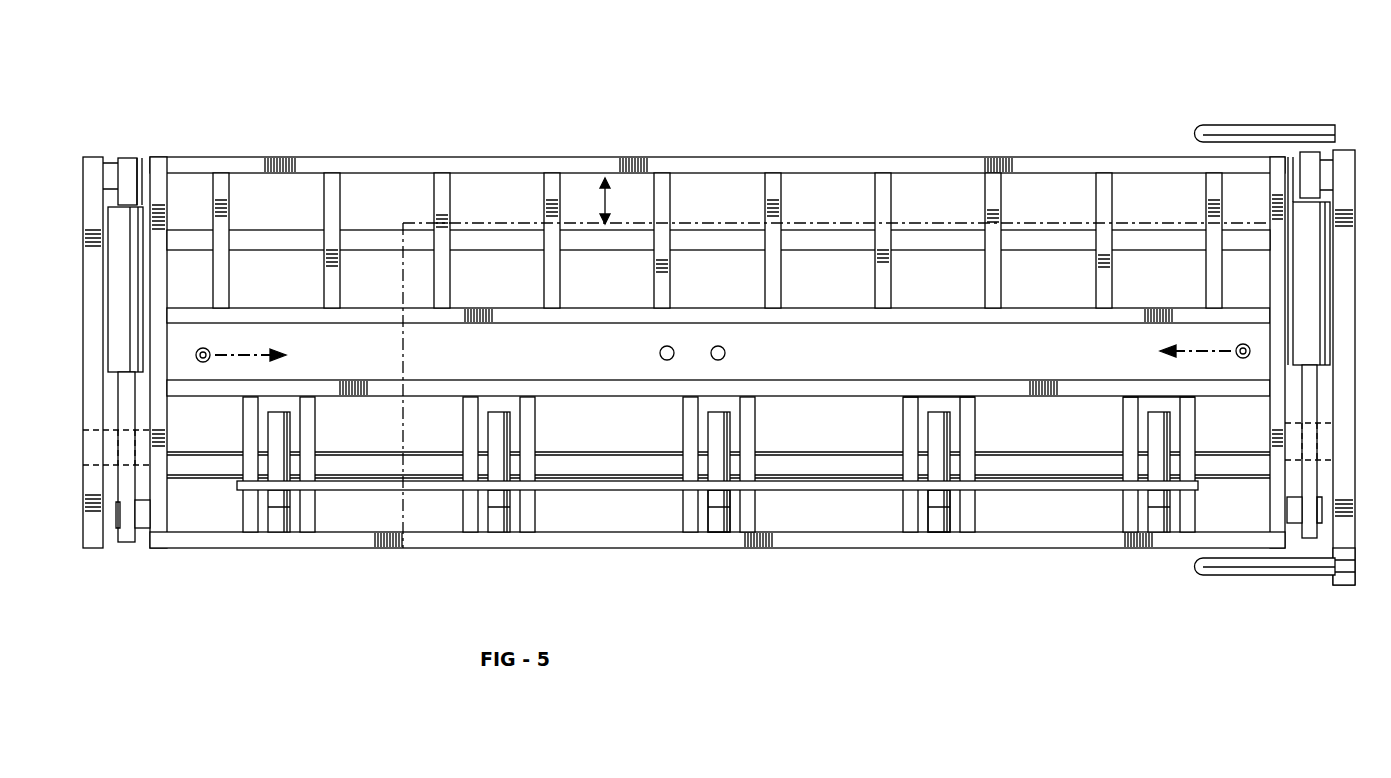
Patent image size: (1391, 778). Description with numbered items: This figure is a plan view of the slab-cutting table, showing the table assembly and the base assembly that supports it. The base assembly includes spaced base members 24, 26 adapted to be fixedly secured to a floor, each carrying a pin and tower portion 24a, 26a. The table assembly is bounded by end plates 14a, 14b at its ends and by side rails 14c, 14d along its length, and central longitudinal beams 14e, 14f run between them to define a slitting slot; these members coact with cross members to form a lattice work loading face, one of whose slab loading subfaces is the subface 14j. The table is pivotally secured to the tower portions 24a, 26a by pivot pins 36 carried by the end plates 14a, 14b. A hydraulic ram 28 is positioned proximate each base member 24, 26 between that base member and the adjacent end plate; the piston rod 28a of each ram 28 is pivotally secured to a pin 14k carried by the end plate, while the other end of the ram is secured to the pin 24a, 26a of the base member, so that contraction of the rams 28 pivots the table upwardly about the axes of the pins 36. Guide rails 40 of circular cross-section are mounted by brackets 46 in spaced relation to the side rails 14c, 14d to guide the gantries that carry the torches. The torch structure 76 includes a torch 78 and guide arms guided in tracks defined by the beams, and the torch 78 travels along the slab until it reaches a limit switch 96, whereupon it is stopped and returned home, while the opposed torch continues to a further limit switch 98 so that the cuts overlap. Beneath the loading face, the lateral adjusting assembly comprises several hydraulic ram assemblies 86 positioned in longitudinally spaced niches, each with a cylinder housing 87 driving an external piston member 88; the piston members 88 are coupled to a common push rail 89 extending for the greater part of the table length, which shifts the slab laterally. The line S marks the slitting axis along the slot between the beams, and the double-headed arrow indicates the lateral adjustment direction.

The end plate 14a is at (160, 158).
The end plate 14b is at (540, 337).
The side rail 14c is at (918, 157).
The side rail 14d is at (1055, 548).
The central longitudinal beam 14e is at (835, 308).
The central longitudinal beam 14f is at (1160, 402).
The slab loading subface 14j is at (938, 405).
The pin 14k is at (148, 512).
The base member 24 is at (95, 548).
The pin / tower portion 24a is at (140, 157).
The base member 26 is at (1345, 470).
The pin / tower portion 26a is at (1330, 168).
The hydraulic ram 28 is at (118, 238).
The piston rod 28a is at (125, 545).
The pivot pin 36 is at (1305, 463).
The guide rail 40 is at (1282, 132).
The bracket 46 is at (1358, 578).
The torch structure 76 is at (706, 443).
The torch 78 is at (203, 362).
The hydraulic ram assembly 86 is at (902, 443).
The cylinder housing 87 is at (505, 447).
The piston member 88 is at (718, 525).
The push rail 89 is at (797, 488).
The limit switch 96 is at (733, 350).
The limit switch 98 is at (652, 350).
The stroke axis S is at (730, 222).